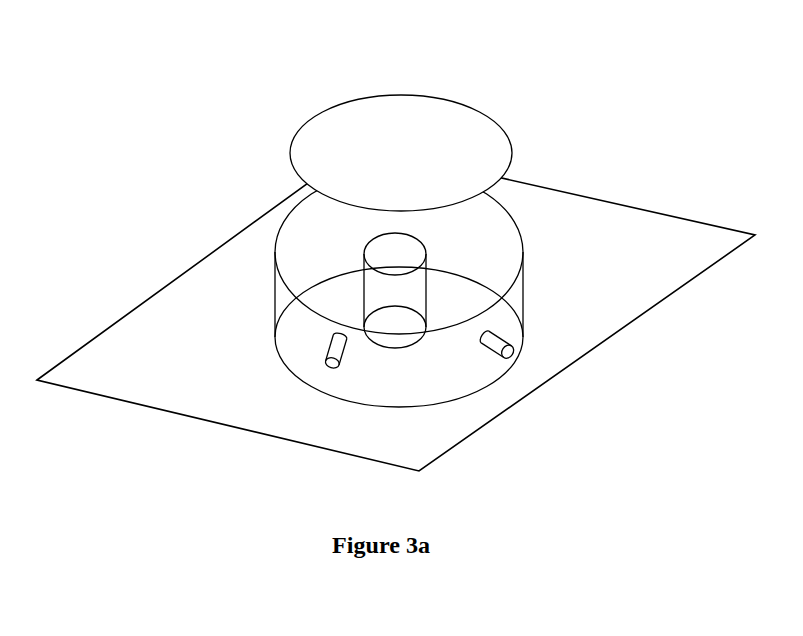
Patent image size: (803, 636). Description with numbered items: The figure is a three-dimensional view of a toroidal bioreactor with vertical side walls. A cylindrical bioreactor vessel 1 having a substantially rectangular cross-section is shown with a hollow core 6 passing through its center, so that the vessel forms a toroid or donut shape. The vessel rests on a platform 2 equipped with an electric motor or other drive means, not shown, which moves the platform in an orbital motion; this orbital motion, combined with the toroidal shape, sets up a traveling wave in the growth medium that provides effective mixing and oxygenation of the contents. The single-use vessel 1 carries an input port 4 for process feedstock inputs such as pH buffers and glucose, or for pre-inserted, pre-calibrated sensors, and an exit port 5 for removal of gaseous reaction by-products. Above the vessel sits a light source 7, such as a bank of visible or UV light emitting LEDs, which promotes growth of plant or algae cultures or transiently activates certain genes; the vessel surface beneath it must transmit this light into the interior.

The cylindrical bioreactor vessel 1 is at (478, 245).
The platform 2 is at (610, 288).
The input port 4 is at (305, 375).
The exit port 5 is at (518, 365).
The hollow core 6 is at (400, 258).
The light source 7 is at (402, 85).